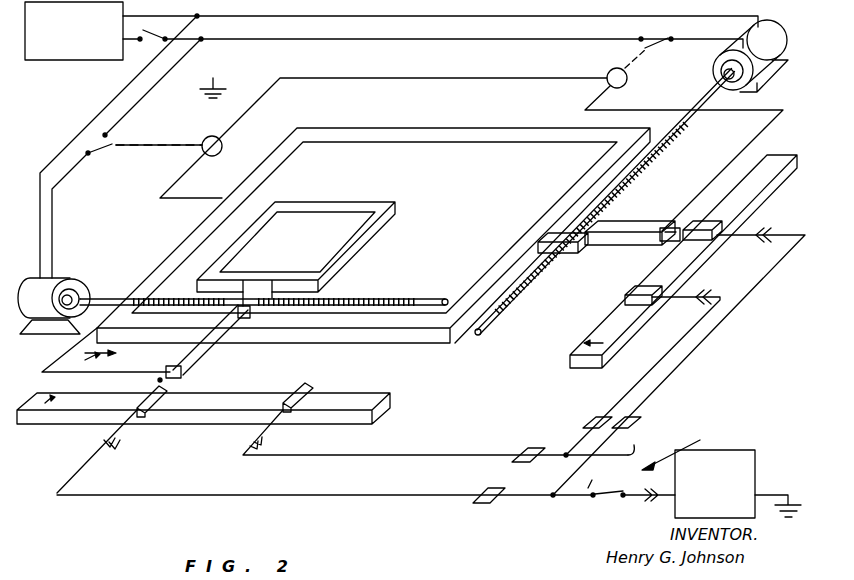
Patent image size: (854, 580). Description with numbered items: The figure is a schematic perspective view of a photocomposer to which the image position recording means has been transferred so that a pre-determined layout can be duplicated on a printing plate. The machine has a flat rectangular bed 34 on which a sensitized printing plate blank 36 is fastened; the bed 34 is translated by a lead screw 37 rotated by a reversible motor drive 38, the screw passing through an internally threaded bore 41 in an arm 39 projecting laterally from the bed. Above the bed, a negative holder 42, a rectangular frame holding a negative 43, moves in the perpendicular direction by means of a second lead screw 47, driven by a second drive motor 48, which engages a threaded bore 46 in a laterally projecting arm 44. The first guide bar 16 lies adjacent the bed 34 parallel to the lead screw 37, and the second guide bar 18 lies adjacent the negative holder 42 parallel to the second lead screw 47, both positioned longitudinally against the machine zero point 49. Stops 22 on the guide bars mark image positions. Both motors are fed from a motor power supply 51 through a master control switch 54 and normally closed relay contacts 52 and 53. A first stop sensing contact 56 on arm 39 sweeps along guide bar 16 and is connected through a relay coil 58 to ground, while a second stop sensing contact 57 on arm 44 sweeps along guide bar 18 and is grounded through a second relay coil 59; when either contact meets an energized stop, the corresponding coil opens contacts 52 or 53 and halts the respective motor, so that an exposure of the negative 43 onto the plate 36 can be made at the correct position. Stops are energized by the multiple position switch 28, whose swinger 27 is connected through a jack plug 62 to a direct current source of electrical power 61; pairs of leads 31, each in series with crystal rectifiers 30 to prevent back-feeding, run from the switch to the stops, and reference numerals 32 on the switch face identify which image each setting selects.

The first guide bar 16 is at (760, 175).
The second guide bar 18 is at (378, 395).
The stops 22 is at (308, 390).
The swinger 27 is at (608, 498).
The switch 28 is at (677, 444).
The crystal rectifiers 30 is at (520, 458).
The leads 31 is at (322, 495).
The reference numerals 32 is at (632, 443).
The bed 34 is at (400, 128).
The printing plate blank 36 is at (374, 227).
The lead screw 37 is at (681, 124).
The motor drive 38 is at (766, 76).
The arm 39 is at (586, 246).
The threaded bore 41 is at (572, 252).
The negative holder 42 is at (325, 200).
The negative 43 is at (297, 242).
The arm 44 is at (245, 320).
The threaded bore 46 is at (251, 312).
The second lead screw 47 is at (385, 299).
The second drive motor 48 is at (60, 283).
The machine zero point 49 is at (85, 353).
The motor power supply 51 is at (88, 63).
The relay contacts 52 is at (652, 45).
The relay contacts 53 is at (100, 150).
The master control switch 54 is at (150, 42).
The first stop sensing contact 56 is at (669, 228).
The second stop sensing contact 57 is at (183, 374).
The relay coil 58 is at (627, 84).
The second relay coil 59 is at (222, 142).
The source of electrical power 61 is at (735, 450).
The jack plug 62 is at (652, 498).